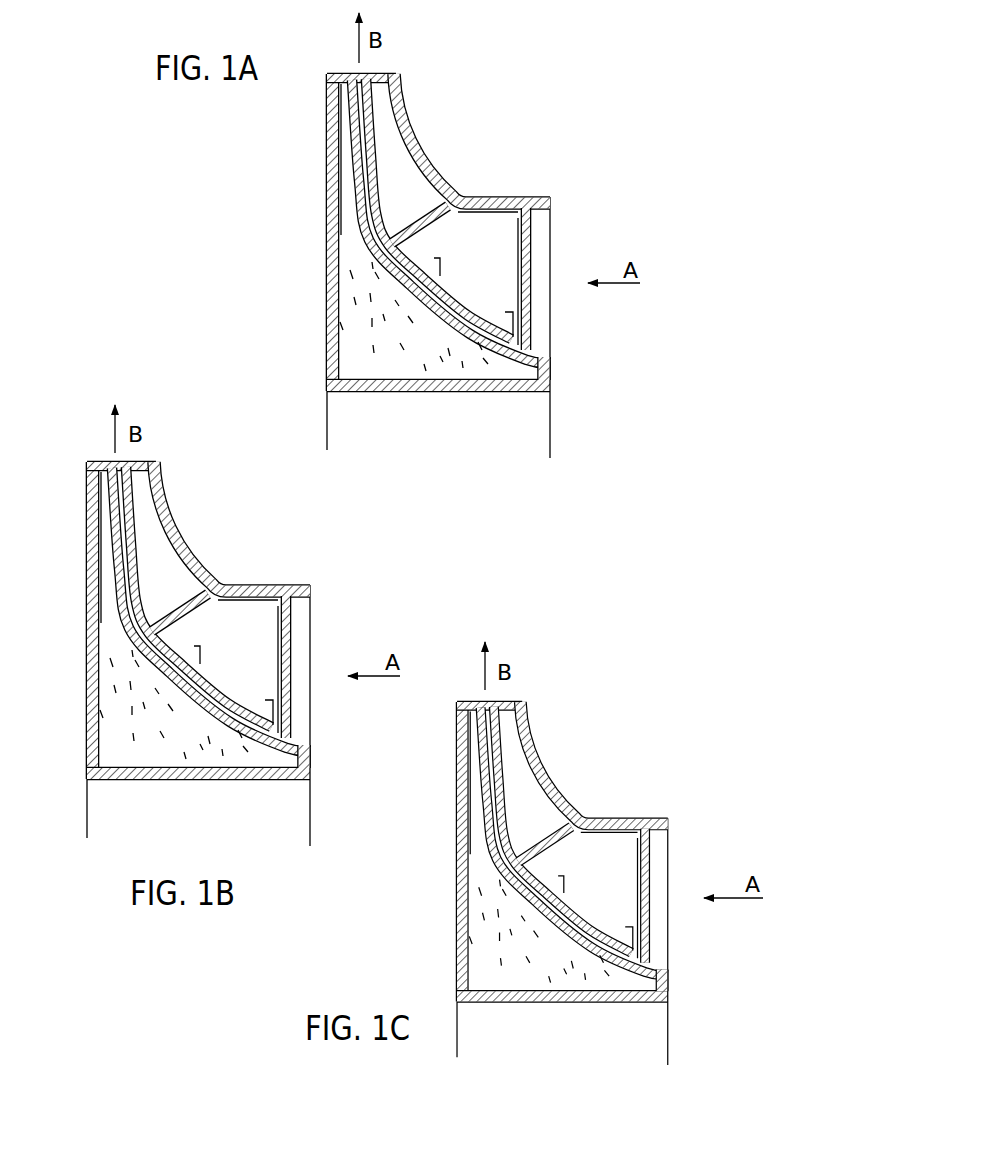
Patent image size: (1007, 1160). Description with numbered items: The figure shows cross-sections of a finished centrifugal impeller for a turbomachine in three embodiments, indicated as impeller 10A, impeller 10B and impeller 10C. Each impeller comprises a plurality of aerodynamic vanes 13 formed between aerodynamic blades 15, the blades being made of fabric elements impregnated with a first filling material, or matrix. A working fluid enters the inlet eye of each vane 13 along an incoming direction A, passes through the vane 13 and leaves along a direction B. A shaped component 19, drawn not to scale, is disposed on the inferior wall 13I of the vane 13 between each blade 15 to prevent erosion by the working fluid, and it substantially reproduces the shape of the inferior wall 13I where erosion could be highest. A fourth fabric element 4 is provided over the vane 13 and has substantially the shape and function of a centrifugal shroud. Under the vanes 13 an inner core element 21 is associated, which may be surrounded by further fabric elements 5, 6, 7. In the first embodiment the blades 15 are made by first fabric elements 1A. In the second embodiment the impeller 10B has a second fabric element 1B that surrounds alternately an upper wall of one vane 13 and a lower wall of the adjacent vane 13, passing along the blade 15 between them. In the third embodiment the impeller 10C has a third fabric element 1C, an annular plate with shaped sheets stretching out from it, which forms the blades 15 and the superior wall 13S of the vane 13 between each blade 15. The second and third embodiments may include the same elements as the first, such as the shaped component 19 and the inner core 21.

In FIG. 1A, the fourth fabric element 4 is at (407, 104).
In FIG. 1B, the fourth fabric element 4 is at (160, 472).
In FIG. 1C, the fourth fabric element 4 is at (522, 702).
In FIG. 1A, the further fabric element 5 is at (330, 312).
In FIG. 1B, the further fabric element 5 is at (92, 692).
In FIG. 1C, the further fabric element 5 is at (459, 913).
In FIG. 1A, the further fabric element 6 is at (371, 248).
In FIG. 1B, the further fabric element 6 is at (133, 618).
In FIG. 1C, the further fabric element 6 is at (494, 822).
In FIG. 1A, the further fabric element 7 is at (417, 382).
In FIG. 1B, the further fabric element 7 is at (163, 780).
In FIG. 1C, the further fabric element 7 is at (542, 991).
In FIG. 1A, the impeller 10A is at (603, 124).
In FIG. 1B, the impeller 10B is at (261, 514).
In FIG. 1C, the impeller 10C is at (610, 718).
In FIG. 1A, the aerodynamic vane 13 is at (378, 140).
In FIG. 1B, the aerodynamic vane 13 is at (143, 536).
In FIG. 1C, the aerodynamic vane 13 is at (503, 758).
In FIG. 1A, the inferior wall 13I is at (356, 106).
In FIG. 1B, the inferior wall 13I is at (118, 497).
In FIG. 1C, the inferior wall 13I is at (477, 723).
In FIG. 1A, the superior wall 13S is at (406, 164).
In FIG. 1B, the superior wall 13S is at (168, 550).
In FIG. 1C, the superior wall 13S is at (527, 778).
In FIG. 1A, the aerodynamic blade 15 is at (436, 203).
In FIG. 1B, the aerodynamic blade 15 is at (199, 586).
In FIG. 1C, the aerodynamic blade 15 is at (563, 822).
In FIG. 1A, the shaped component 19 is at (343, 162).
In FIG. 1B, the shaped component 19 is at (103, 540).
In FIG. 1C, the shaped component 19 is at (470, 760).
In FIG. 1A, the inner core element 21 is at (360, 345).
In FIG. 1B, the inner core element 21 is at (112, 735).
In FIG. 1C, the inner core element 21 is at (487, 953).
In FIG. 1A, the first fabric element 1A is at (476, 204).
In FIG. 1B, the second fabric element 1B is at (250, 586).
In FIG. 1C, the third fabric element 1C is at (615, 817).